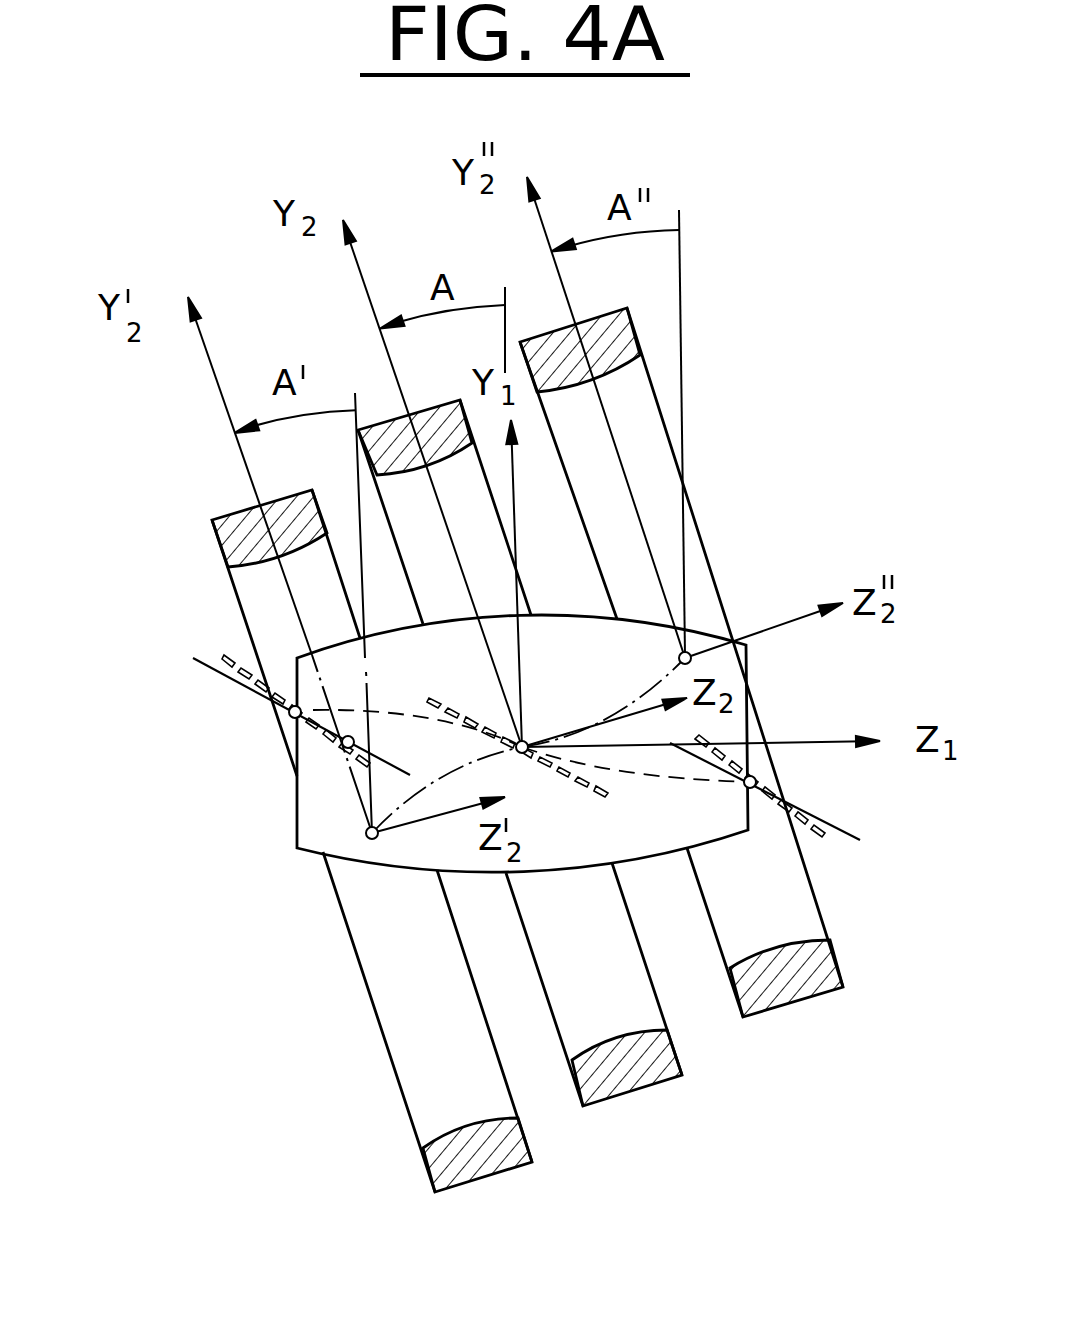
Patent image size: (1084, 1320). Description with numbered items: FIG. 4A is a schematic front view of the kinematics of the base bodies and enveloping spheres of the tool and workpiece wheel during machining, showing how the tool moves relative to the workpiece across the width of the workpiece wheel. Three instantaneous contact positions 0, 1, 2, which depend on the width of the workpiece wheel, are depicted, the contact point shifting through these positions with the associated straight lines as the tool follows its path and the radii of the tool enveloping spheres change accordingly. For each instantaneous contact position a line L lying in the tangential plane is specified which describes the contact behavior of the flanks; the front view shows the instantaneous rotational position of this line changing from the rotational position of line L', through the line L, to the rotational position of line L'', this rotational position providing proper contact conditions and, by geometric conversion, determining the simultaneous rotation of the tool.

The instantaneous contact position 0 is at (520, 753).
The instantaneous contact position 1 is at (372, 841).
The instantaneous contact position 2 is at (681, 662).
The line L is at (532, 779).
The rotational position of line L L' is at (296, 715).
The rotational position of line L L'' is at (775, 819).